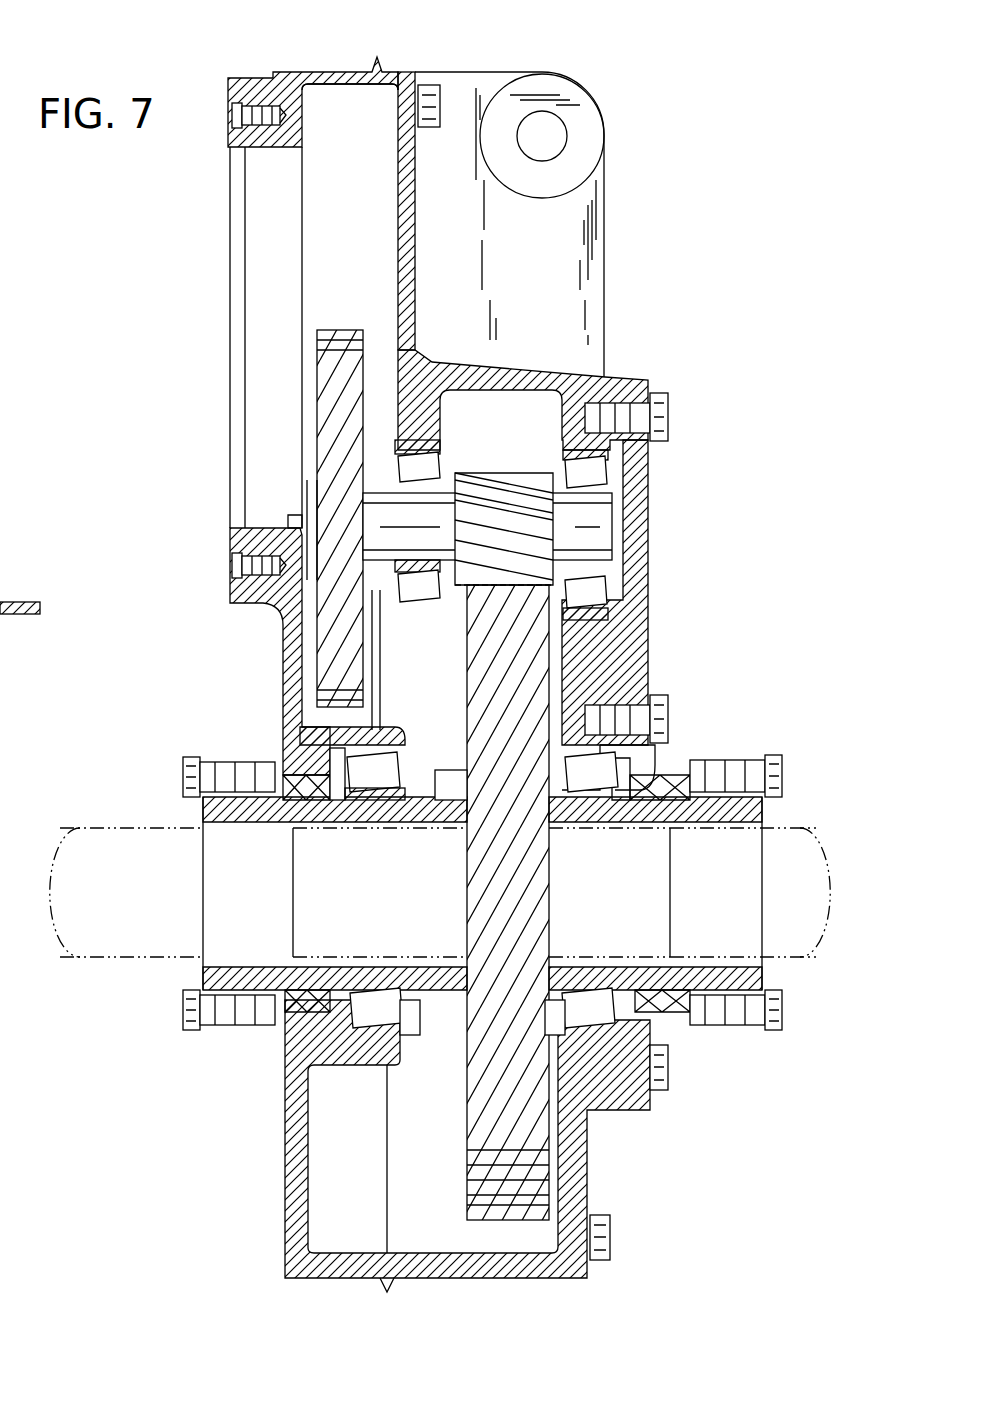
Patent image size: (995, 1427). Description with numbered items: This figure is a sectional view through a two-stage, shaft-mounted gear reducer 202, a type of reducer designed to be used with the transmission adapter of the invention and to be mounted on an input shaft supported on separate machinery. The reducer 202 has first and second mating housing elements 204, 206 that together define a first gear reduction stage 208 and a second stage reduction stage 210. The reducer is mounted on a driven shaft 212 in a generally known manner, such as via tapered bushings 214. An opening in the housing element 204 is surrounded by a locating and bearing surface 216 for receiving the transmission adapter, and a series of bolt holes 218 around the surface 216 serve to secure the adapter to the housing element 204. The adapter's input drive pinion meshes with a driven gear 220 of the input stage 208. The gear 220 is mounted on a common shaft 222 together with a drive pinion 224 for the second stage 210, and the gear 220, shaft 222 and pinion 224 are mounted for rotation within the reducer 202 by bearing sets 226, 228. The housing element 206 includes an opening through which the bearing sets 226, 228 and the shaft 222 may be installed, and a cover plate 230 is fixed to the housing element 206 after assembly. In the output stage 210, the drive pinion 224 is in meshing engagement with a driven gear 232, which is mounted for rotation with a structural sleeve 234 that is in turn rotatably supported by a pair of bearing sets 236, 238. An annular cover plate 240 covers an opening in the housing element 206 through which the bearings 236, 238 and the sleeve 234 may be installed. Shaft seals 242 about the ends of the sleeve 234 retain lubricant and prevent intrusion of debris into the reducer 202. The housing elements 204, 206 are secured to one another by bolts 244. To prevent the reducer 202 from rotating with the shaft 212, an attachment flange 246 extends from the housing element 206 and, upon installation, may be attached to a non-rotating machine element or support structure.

The two-stage, shaft-mounted gear reducer 202 is at (568, 66).
The first housing element 204 is at (300, 74).
The second housing element 206 is at (400, 74).
The first gear reduction stage 208 is at (350, 100).
The second stage reduction stage 210 is at (530, 400).
The driven shaft 212 is at (150, 828).
The tapered bushings 214 is at (205, 965).
The locating and bearing surface 216 is at (230, 528).
The bolt holes 218 is at (234, 116).
The driven gear 220 is at (350, 328).
The common shaft 222 is at (375, 520).
The drive pinion 224 is at (485, 478).
The bearing set 226 is at (412, 450).
The bearing set 228 is at (612, 440).
The cover plate 230 is at (645, 600).
The driven gear 232 is at (470, 692).
The structural sleeve 234 is at (665, 775).
The bearing set 236 is at (375, 990).
The bearing set 238 is at (662, 1072).
The annular cover plate 240 is at (640, 1105).
The shaft seals 242 is at (290, 1030).
The bolts 244 is at (432, 105).
The attachment flange 246 is at (588, 258).